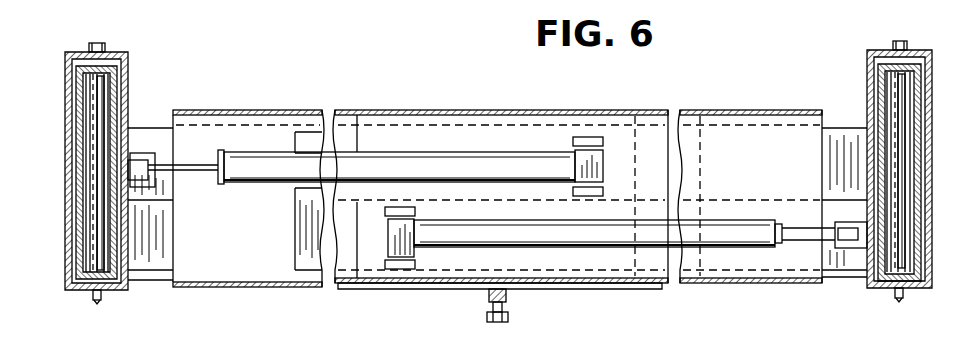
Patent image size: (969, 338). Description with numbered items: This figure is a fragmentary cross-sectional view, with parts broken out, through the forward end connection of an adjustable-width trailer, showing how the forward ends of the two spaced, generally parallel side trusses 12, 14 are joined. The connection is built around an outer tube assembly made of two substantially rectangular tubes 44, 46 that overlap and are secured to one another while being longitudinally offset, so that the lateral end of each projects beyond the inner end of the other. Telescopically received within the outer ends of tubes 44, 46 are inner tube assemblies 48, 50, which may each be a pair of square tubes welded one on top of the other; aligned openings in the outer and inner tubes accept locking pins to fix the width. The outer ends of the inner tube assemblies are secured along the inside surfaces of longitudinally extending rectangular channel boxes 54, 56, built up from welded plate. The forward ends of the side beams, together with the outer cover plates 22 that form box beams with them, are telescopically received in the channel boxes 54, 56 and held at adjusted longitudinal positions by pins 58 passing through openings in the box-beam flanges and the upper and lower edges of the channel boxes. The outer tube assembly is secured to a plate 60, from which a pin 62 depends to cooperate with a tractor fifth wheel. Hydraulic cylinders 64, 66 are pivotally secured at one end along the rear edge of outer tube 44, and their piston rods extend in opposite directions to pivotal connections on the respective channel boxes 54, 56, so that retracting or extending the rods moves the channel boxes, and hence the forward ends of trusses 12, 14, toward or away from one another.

The side truss 12 is at (125, 82).
The side truss 14 is at (882, 56).
The outer cover plate 22 is at (70, 124).
The rectangular shaped tube 44 is at (545, 111).
The rectangular shaped tube 46 is at (306, 111).
The inner tube assembly 48 is at (834, 130).
The inner tube assembly 50 is at (167, 262).
The channel box 54 is at (66, 75).
The channel box 56 is at (867, 80).
The pin 58 is at (98, 50).
The plate 60 is at (508, 296).
The pin 62 is at (487, 303).
The hydraulic cylinder 64 is at (418, 115).
The hydraulic cylinder 66 is at (573, 248).